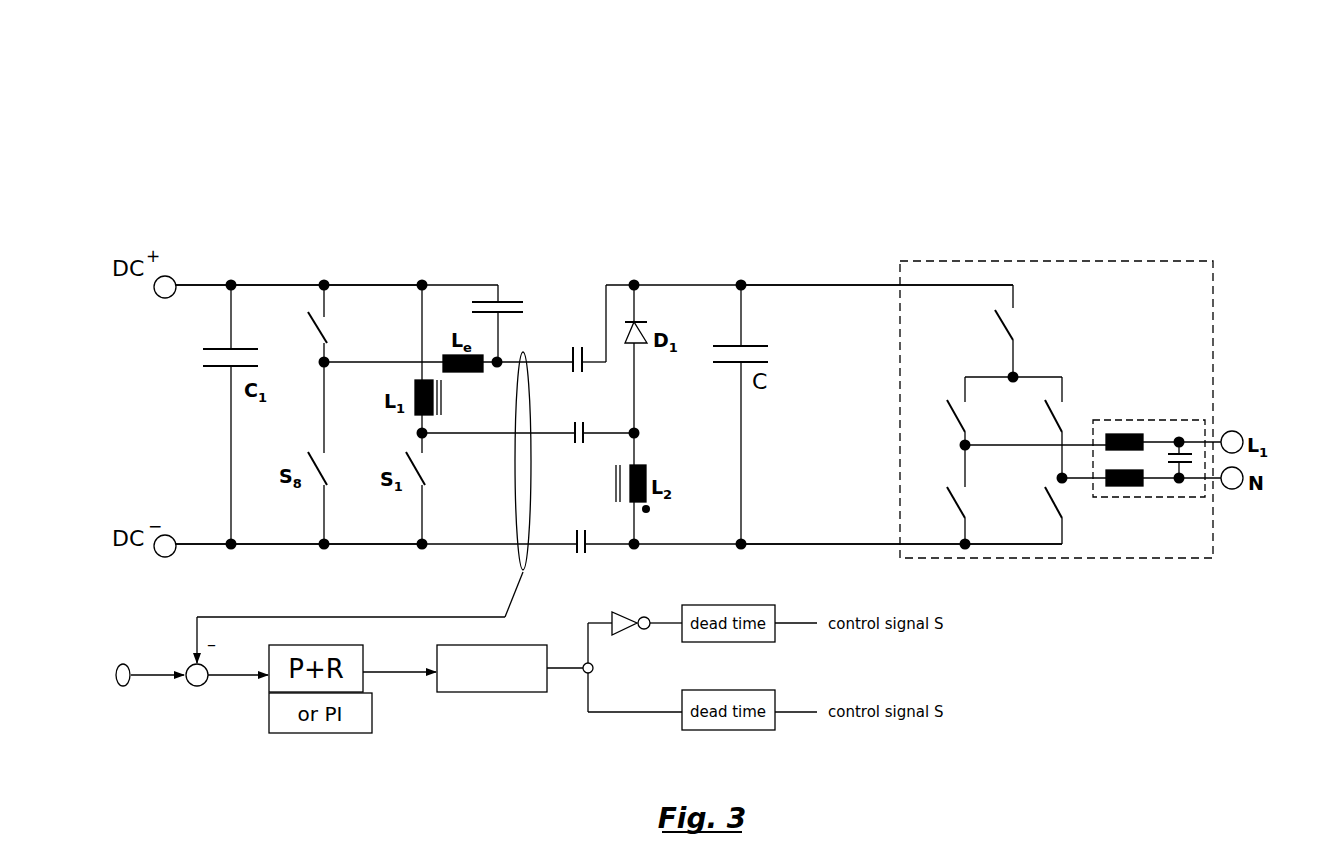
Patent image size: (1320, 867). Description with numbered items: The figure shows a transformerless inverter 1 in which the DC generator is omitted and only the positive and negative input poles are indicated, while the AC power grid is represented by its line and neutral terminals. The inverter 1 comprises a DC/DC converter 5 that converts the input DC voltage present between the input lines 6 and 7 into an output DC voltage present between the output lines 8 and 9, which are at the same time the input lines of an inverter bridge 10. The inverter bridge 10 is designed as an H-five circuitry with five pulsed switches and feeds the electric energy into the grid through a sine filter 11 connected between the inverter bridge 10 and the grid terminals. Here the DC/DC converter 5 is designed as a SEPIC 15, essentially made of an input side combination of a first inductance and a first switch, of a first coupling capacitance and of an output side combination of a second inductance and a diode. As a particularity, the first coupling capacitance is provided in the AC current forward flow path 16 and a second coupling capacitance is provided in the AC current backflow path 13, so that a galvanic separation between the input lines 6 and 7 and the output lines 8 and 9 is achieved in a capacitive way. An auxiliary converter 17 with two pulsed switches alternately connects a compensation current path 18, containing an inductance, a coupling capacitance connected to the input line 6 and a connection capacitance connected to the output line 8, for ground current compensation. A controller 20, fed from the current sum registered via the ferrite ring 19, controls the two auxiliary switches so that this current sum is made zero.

The inverter 1 is at (722, 219).
The DC/DC converter 5 is at (542, 227).
The input line 6 is at (267, 285).
The input line 7 is at (270, 544).
The output line 8 is at (800, 285).
The output line 9 is at (815, 544).
The inverter bridge 10 is at (1077, 343).
The sine filter 11 is at (1155, 407).
The AC current backflow path 13 is at (561, 552).
The SEPIC 15 is at (572, 270).
The AC current forward flow path 16 is at (548, 413).
The auxiliary converter 17 is at (353, 325).
The compensation current path 18 is at (377, 353).
The ferrite ring 19 is at (515, 473).
The controller 20 is at (427, 702).